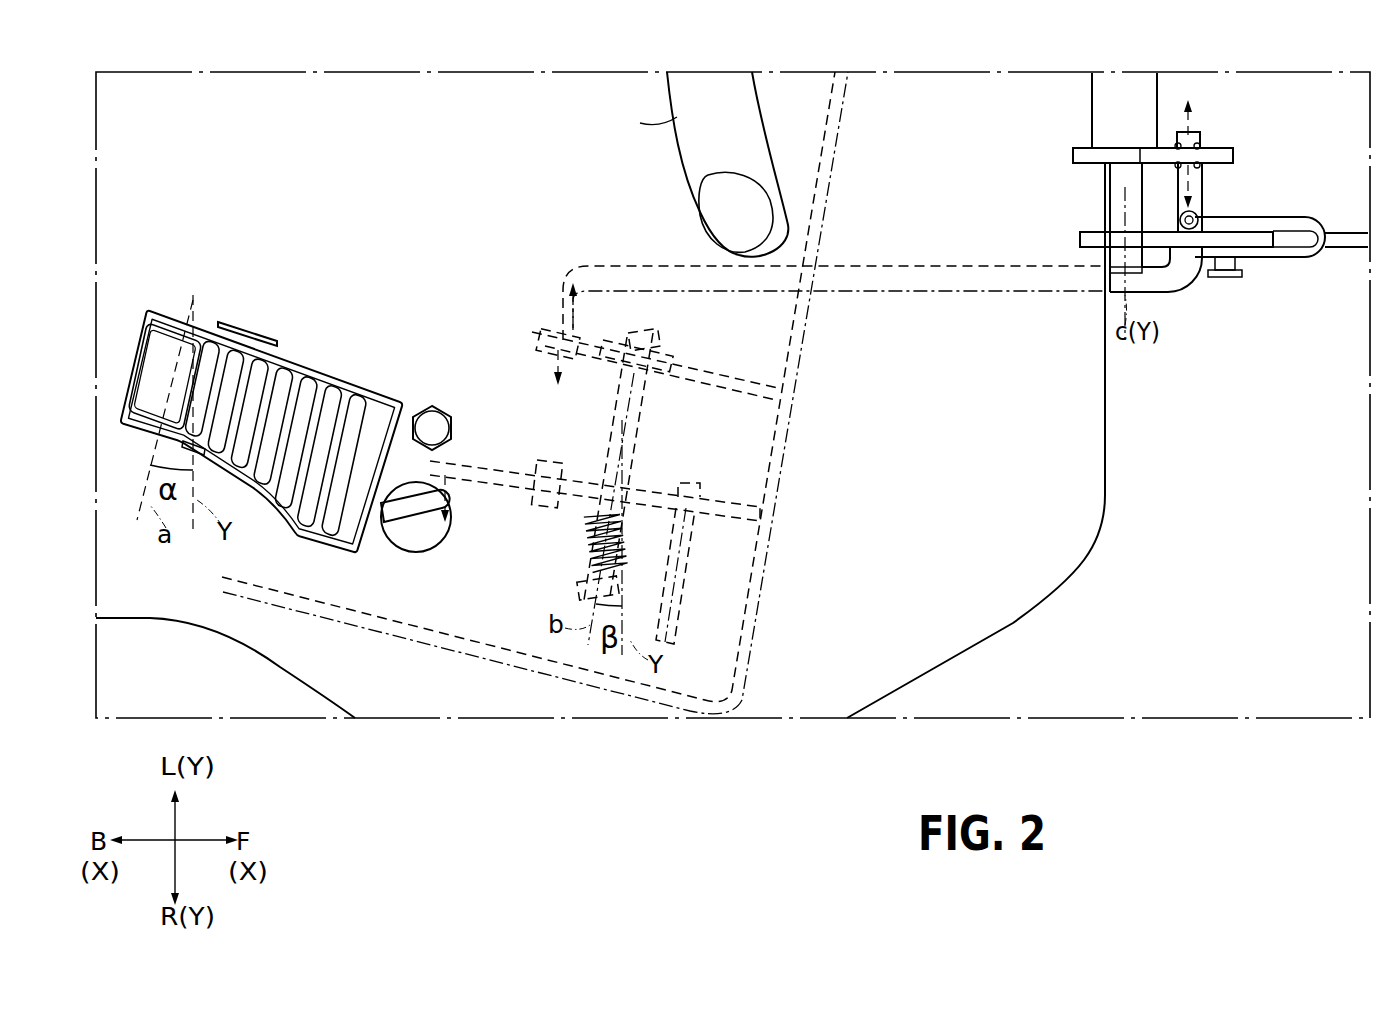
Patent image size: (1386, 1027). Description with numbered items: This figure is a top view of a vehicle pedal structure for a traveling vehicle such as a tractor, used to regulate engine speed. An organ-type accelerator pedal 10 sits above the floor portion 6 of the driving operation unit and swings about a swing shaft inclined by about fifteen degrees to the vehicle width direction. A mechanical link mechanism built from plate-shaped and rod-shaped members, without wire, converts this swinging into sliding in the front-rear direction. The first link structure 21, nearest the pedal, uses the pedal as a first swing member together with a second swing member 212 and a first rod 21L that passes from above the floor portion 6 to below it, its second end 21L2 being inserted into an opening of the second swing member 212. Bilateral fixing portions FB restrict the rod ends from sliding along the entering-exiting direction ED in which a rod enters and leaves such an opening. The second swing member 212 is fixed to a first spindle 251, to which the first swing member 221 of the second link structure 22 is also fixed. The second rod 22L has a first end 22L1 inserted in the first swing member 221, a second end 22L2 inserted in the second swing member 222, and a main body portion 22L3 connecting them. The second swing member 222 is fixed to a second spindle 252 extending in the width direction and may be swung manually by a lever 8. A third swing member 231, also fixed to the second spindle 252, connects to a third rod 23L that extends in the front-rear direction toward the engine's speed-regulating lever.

The floor portion 6 is at (1012, 625).
The lever 8 is at (675, 118).
The accelerator pedal 10 is at (337, 395).
The second swing member 212 is at (400, 440).
The first link structure 21 is at (567, 493).
The first rod 21L is at (415, 540).
The second end 21L2 is at (452, 528).
The first swing member 221 is at (540, 340).
The first spindle 251 is at (643, 432).
The second link structure 22 is at (663, 393).
The second rod 22L is at (858, 280).
The first end 22L1 is at (558, 330).
The main body portion 22L3 is at (933, 268).
The second end 22L2 is at (1205, 202).
The second swing member 222 is at (1220, 150).
The third swing member 231 is at (1160, 242).
The second spindle 252 is at (1132, 270).
The third rod 23L is at (1345, 250).
The entering-exiting direction ED is at (583, 330).
The bilateral fixing portions FB is at (530, 362).